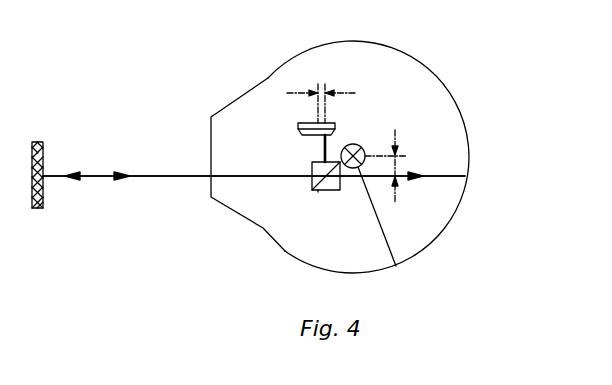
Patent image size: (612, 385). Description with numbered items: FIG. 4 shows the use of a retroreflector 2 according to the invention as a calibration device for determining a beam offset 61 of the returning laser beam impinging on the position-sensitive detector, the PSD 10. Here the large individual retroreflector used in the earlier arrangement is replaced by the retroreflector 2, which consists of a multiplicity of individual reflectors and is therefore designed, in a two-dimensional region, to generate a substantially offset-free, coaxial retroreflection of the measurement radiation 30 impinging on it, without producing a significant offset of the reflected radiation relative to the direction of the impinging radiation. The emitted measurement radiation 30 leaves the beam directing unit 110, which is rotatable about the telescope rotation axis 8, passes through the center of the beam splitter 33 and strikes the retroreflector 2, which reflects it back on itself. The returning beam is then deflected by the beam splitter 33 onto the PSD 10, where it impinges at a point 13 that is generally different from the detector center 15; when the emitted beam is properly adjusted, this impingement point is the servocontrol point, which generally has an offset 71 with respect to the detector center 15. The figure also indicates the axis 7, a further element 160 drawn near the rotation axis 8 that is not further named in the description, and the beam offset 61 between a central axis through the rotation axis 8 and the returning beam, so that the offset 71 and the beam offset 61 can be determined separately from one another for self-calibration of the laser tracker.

The retroreflector 2 is at (42, 142).
The axis 7 is at (315, 115).
The telescope rotation axis 8 is at (360, 146).
The position-sensitive detector (PSD) 10 is at (343, 113).
The impingement point 13 is at (312, 177).
The detector center 15 is at (315, 134).
The emitted measurement radiation 30 is at (195, 178).
The beam splitter 33 is at (318, 192).
The beam offset 61 is at (395, 162).
The offset 71 is at (322, 92).
The beam directing unit 110 is at (236, 61).
The light emitter 160 is at (396, 266).